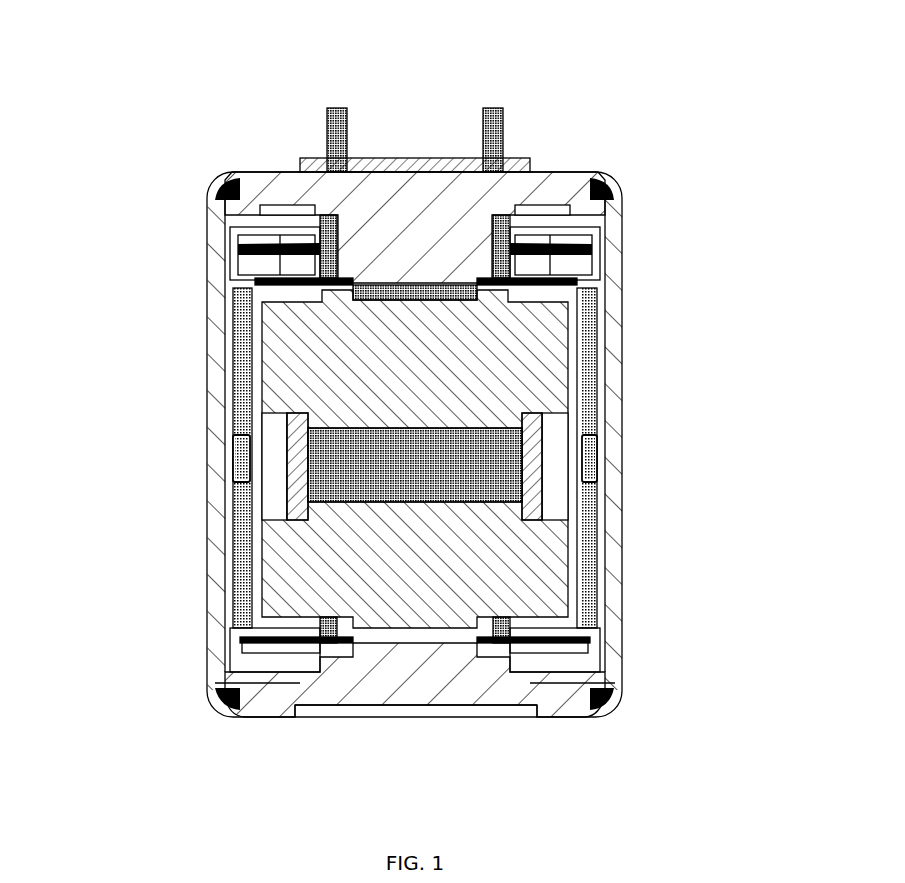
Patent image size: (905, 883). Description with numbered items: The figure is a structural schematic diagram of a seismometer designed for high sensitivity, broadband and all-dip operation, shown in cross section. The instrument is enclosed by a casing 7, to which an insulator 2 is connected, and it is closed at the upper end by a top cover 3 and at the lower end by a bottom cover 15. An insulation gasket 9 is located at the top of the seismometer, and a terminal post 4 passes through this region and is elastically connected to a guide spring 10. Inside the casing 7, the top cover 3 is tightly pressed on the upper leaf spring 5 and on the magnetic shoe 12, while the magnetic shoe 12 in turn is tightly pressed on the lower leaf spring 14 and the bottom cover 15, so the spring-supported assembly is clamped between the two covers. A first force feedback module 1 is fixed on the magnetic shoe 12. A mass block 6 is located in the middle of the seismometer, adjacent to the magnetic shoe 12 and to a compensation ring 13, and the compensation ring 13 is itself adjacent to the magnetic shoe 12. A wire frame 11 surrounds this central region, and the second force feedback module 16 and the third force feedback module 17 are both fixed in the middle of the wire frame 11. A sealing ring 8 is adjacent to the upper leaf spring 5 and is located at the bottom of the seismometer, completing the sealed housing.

The first force feedback module 1 is at (415, 292).
The insulator 2 is at (557, 107).
The top cover 3 is at (511, 191).
The terminal post 4 is at (645, 231).
The upper leaf spring 5 is at (575, 290).
The mass block 6 is at (552, 457).
The casing 7 is at (502, 444).
The sealing ring 8 is at (693, 662).
The insulation gasket 9 is at (292, 106).
The guide spring 10 is at (196, 234).
The wire frame 11 is at (321, 451).
The magnetic shoe 12 is at (307, 459).
The compensation ring 13 is at (296, 466).
The lower leaf spring 14 is at (326, 610).
The bottom cover 15 is at (330, 677).
The second force feedback module 16 is at (232, 462).
The third force feedback module 17 is at (597, 460).